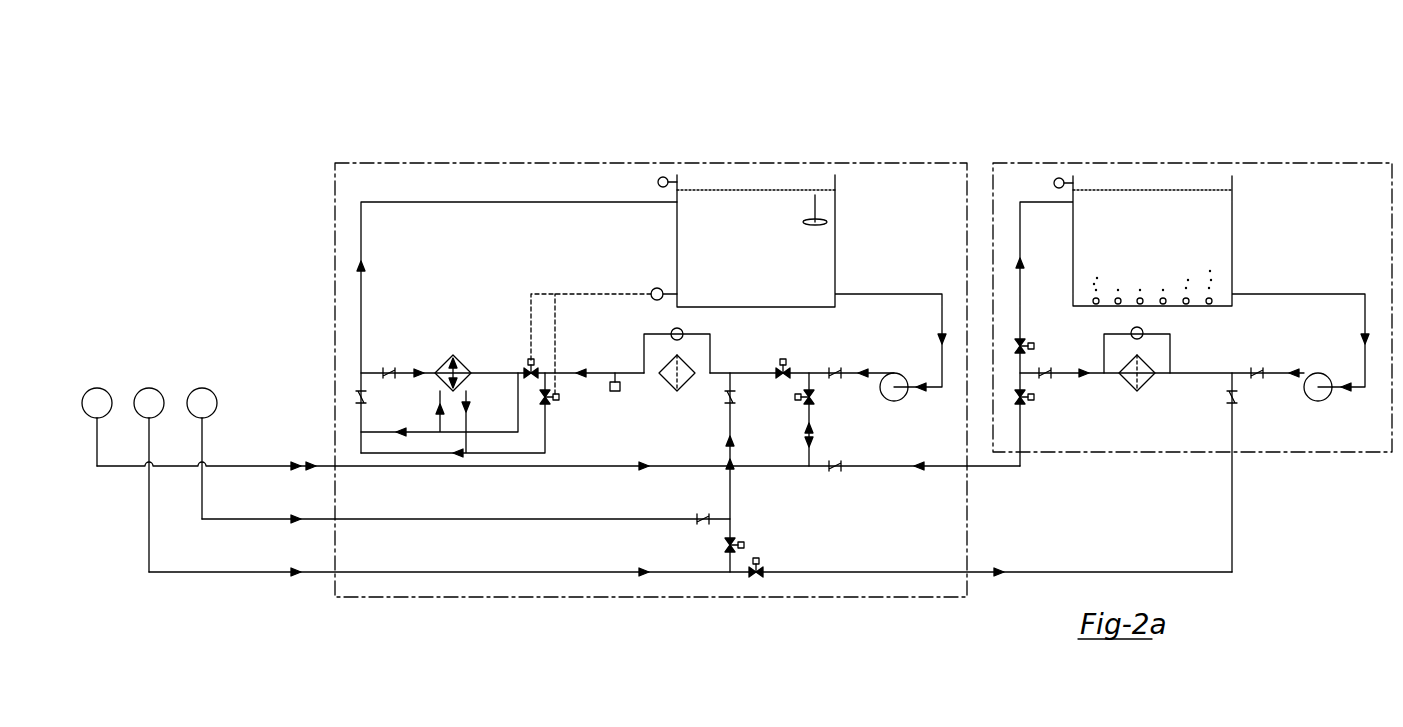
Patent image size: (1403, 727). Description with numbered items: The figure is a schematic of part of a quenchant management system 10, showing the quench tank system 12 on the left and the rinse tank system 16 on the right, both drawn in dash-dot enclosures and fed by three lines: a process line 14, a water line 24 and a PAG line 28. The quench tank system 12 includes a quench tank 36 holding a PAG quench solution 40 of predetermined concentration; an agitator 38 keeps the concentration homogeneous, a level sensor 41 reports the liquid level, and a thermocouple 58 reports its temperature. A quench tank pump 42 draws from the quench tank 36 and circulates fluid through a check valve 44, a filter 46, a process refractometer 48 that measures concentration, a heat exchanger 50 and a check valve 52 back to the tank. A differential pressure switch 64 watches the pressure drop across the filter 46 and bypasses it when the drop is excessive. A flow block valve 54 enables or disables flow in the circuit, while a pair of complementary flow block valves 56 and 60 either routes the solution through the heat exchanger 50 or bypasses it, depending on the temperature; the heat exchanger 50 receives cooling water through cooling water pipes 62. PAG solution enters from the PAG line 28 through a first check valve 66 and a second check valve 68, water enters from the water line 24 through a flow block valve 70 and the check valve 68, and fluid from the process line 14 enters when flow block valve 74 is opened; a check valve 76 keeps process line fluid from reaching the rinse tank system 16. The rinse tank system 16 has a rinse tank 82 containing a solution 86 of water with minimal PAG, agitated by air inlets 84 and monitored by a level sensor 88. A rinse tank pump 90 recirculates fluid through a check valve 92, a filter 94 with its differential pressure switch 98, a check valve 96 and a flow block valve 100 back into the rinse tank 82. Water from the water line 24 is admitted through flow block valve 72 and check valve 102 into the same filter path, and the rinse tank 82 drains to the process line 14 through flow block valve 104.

The cleaning system 10 is at (276, 116).
The quench tank system 12 is at (848, 163).
The rinse tank system 16 is at (1056, 163).
The process line 14 is at (252, 466).
The water line 24 is at (238, 572).
The PAG line 28 is at (246, 519).
The quench tank 36 is at (835, 254).
The agitator 38 is at (827, 222).
The quench solution 40 is at (758, 266).
The level sensor 41 is at (658, 182).
The quench tank pump 42 is at (892, 401).
The check valve 44 is at (834, 364).
The filter 46 is at (675, 393).
The process refractometer 48 is at (612, 368).
The heat exchanger 50 is at (445, 373).
The check valve 52 is at (389, 373).
The flow block valve 54 is at (786, 358).
The flow block valve 56 is at (528, 366).
The thermocouple 58 is at (652, 284).
The flow block valve 60 is at (552, 400).
The cooling water pipes 62 is at (440, 415).
The differential pressure switch 64 is at (683, 332).
The first check valve 66 is at (708, 513).
The second check valve 68 is at (738, 398).
The flow block valve 70 is at (740, 545).
The flow block valve 72 is at (760, 556).
The flow block valve 74 is at (818, 397).
The check valve 76 is at (838, 472).
The rinse tank 82 is at (1232, 240).
The air inlets 84 is at (1214, 301).
The solution 86 is at (1132, 234).
The level sensor 88 is at (1054, 183).
The rinse tank pump 90 is at (1318, 401).
The check valve 92 is at (1257, 380).
The filter 94 is at (1134, 390).
The check valve 96 is at (1046, 380).
The differential pressure switch 98 is at (1143, 330).
The flow block valve 100 is at (1034, 346).
The check valve 102 is at (1226, 398).
The flow block valve 104 is at (1034, 398).